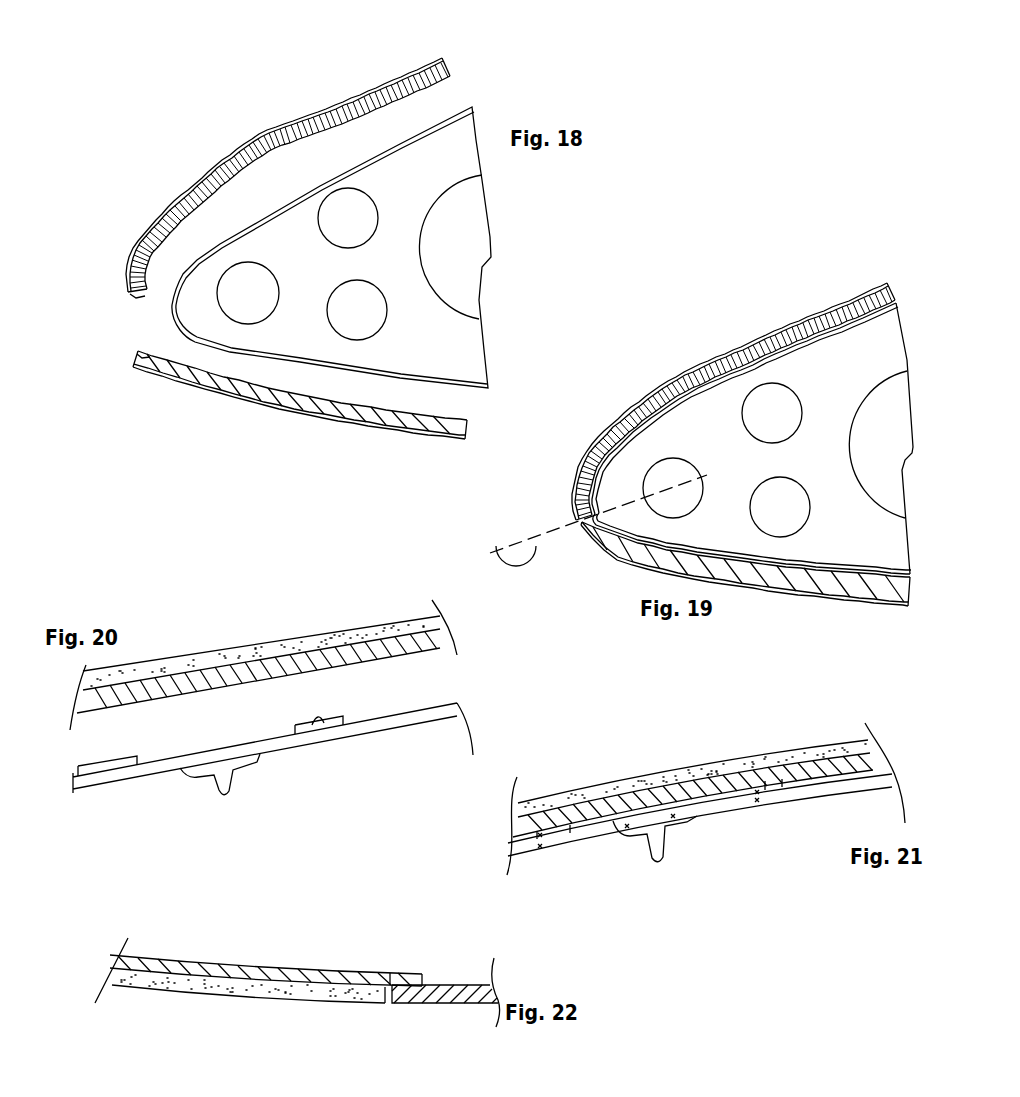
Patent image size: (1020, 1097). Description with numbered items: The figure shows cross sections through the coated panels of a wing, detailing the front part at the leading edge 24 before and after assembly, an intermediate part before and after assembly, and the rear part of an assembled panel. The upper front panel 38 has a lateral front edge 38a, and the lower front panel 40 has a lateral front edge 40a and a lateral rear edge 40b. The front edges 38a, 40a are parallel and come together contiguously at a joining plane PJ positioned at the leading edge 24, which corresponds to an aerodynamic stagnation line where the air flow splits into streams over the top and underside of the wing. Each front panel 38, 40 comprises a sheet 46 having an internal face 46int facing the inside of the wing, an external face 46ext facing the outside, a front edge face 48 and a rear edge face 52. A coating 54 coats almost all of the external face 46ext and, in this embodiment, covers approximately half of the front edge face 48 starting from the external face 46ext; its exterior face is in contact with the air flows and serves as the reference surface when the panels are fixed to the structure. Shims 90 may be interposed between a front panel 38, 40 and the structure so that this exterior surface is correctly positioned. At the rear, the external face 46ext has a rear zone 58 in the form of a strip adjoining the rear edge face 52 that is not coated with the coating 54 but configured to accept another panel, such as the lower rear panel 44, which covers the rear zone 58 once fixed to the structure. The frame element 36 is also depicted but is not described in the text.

In FIG. 18, the leading edge 24 is at (95, 248).
In FIG. 19, the leading edge 24 is at (562, 428).
In FIG. 18, the front frame 36 is at (457, 320).
In FIG. 19, the front frame 36 is at (818, 355).
In FIG. 18, the upper front panel 38 is at (306, 120).
In FIG. 19, the upper front panel 38 is at (688, 377).
In FIG. 20, the upper front panel 38 is at (160, 660).
In FIG. 21, the upper front panel 38 is at (640, 770).
In FIG. 18, the lateral front edge 38a is at (143, 298).
In FIG. 19, the lateral front edge 38a is at (577, 518).
In FIG. 18, the lower front panel 40 is at (233, 414).
In FIG. 19, the lower front panel 40 is at (802, 598).
In FIG. 22, the lower front panel 40 is at (240, 1006).
In FIG. 18, the lateral front edge 40a is at (137, 355).
In FIG. 19, the lateral front edge 40a is at (582, 525).
In FIG. 22, the lateral rear edge 40b is at (419, 973).
In FIG. 22, the lower rear panel 44 is at (444, 1006).
In FIG. 18, the sheet 46 is at (452, 67).
In FIG. 19, the sheet 46 is at (890, 299).
In FIG. 20, the sheet 46 is at (442, 638).
In FIG. 21, the sheet 46 is at (875, 758).
In FIG. 22, the sheet 46 is at (221, 958).
In FIG. 18, the external face 46ext is at (382, 82).
In FIG. 20, the external face 46ext is at (277, 640).
In FIG. 21, the external face 46ext is at (725, 762).
In FIG. 22, the external face 46ext is at (127, 985).
In FIG. 18, the internal face 46int is at (443, 85).
In FIG. 20, the internal face 46int is at (422, 648).
In FIG. 21, the internal face 46int is at (707, 797).
In FIG. 22, the internal face 46int is at (151, 956).
In FIG. 18, the front edge face 48 is at (150, 322).
In FIG. 19, the front edge face 48 is at (588, 516).
In FIG. 22, the rear edge face 52 is at (424, 978).
In FIG. 18, the coating 54 is at (272, 136).
In FIG. 19, the coating 54 is at (837, 299).
In FIG. 20, the coating 54 is at (405, 623).
In FIG. 21, the coating 54 is at (837, 742).
In FIG. 22, the coating 54 is at (300, 998).
In FIG. 22, the rear zone 58 is at (390, 970).
In FIG. 20, the shims 90 is at (110, 758).
In FIG. 21, the shims 90 is at (555, 838).
In FIG. 19, the joining plane PJ is at (598, 520).